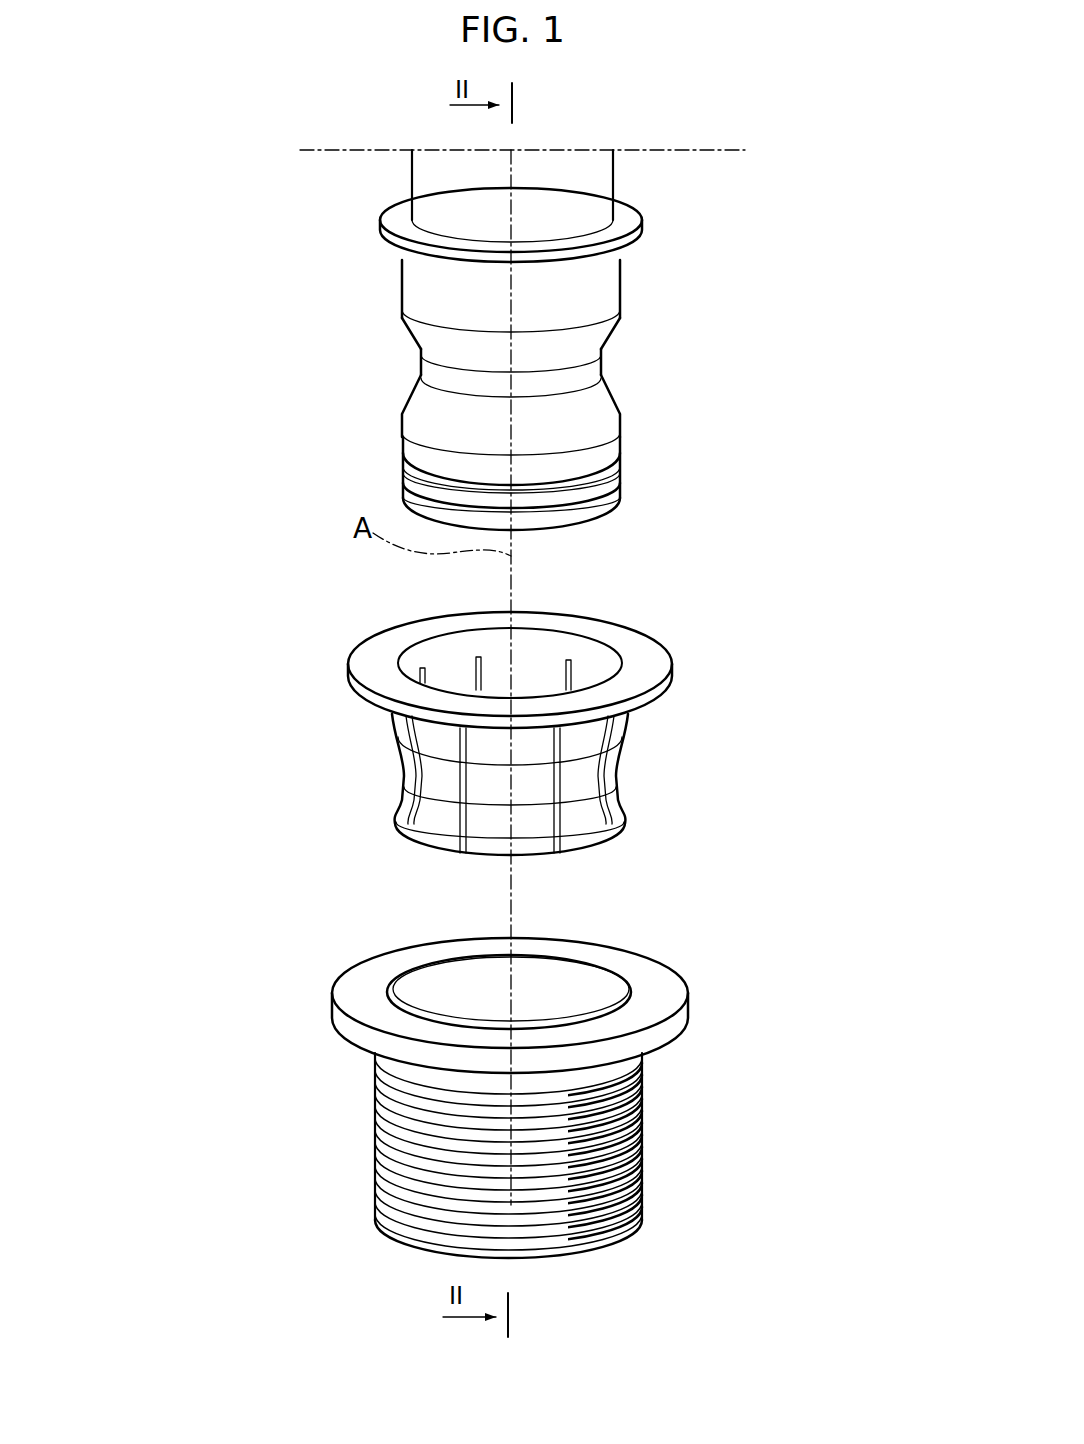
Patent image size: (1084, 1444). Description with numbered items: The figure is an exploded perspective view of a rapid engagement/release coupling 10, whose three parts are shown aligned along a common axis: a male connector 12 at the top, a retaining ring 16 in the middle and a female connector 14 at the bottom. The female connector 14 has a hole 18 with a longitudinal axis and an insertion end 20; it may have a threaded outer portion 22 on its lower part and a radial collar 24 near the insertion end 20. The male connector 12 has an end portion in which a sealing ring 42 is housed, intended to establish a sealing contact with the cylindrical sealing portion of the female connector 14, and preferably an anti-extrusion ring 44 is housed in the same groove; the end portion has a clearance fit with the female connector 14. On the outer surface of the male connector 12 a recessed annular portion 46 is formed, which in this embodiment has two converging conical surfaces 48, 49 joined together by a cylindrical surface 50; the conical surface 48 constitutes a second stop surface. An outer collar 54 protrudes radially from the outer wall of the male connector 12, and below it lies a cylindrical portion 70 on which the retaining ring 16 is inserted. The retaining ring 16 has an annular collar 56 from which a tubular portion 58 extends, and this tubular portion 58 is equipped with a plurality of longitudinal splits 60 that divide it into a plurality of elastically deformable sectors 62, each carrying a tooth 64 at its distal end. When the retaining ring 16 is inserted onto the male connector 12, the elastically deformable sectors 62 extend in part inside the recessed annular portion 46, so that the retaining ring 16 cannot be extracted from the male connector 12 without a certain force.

The rapid engagement/release coupling 10 is at (244, 228).
The male connector 12 is at (745, 307).
The female connector 14 is at (743, 1104).
The retaining ring 16 is at (270, 729).
The hole 18 is at (460, 985).
The insertion end 20 is at (402, 974).
The threaded outer portion 22 is at (642, 1163).
The radial collar 24 is at (358, 1030).
The sealing ring 42 is at (612, 490).
The anti-extrusion ring 44 is at (620, 452).
The recessed annular portion 46 is at (625, 366).
The conical surface 48 is at (419, 396).
The conical surface 49 is at (423, 328).
The cylindrical surface 50 is at (432, 366).
The outer collar 54 is at (638, 195).
The annular collar 56 is at (652, 652).
The tubular portion 58 is at (648, 750).
The longitudinal splits 60 is at (478, 658).
The elastically deformable sectors 62 is at (428, 814).
The teeth 64 is at (425, 838).
The cylindrical portion 70 is at (622, 265).